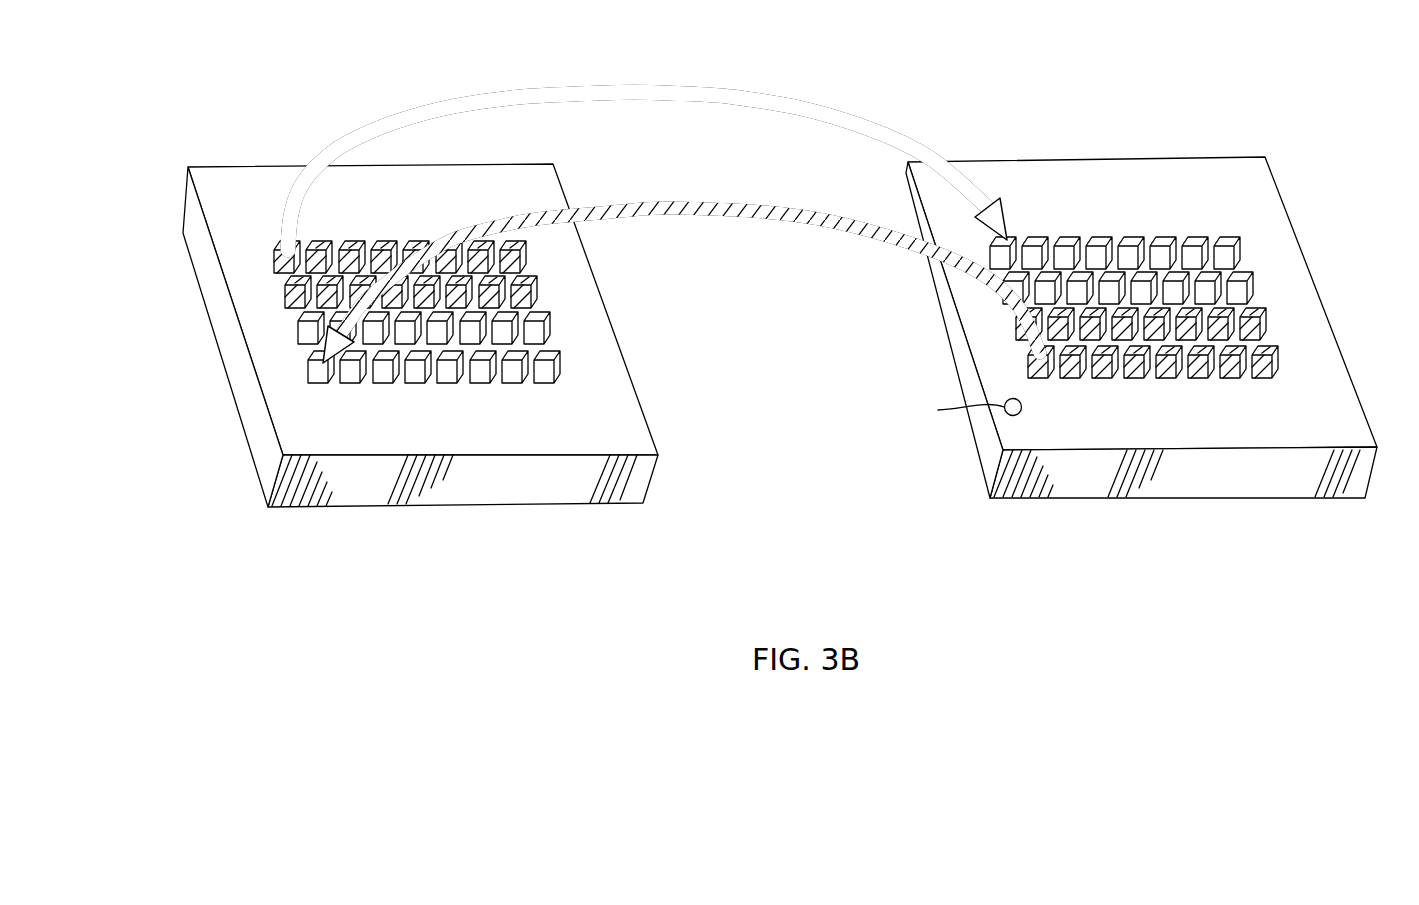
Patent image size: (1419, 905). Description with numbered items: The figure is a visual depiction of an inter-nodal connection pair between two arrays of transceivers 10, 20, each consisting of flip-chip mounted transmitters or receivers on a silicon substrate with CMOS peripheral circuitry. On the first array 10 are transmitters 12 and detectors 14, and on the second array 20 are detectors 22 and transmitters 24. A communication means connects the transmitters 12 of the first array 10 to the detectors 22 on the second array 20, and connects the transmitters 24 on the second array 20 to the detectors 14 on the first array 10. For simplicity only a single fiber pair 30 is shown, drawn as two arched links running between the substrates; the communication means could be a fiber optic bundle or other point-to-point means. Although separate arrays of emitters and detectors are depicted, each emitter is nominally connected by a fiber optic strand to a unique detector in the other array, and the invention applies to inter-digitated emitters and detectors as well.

The array of transceivers 10 is at (252, 393).
The transmitters 12 is at (275, 251).
The detectors 14 is at (300, 333).
The array of transceivers 20 is at (1338, 343).
The detectors 22 is at (1043, 237).
The transmitters 24 is at (1072, 380).
The fiber pair 30 is at (665, 84).